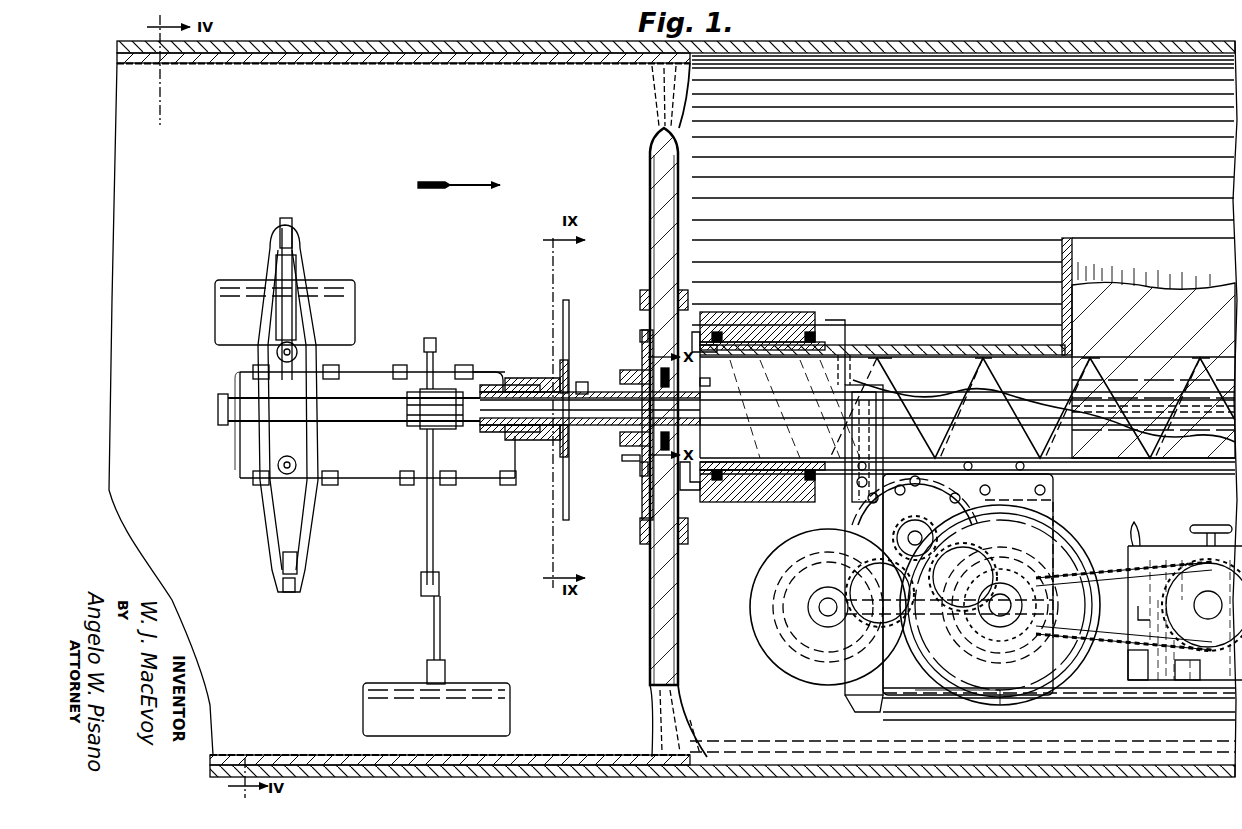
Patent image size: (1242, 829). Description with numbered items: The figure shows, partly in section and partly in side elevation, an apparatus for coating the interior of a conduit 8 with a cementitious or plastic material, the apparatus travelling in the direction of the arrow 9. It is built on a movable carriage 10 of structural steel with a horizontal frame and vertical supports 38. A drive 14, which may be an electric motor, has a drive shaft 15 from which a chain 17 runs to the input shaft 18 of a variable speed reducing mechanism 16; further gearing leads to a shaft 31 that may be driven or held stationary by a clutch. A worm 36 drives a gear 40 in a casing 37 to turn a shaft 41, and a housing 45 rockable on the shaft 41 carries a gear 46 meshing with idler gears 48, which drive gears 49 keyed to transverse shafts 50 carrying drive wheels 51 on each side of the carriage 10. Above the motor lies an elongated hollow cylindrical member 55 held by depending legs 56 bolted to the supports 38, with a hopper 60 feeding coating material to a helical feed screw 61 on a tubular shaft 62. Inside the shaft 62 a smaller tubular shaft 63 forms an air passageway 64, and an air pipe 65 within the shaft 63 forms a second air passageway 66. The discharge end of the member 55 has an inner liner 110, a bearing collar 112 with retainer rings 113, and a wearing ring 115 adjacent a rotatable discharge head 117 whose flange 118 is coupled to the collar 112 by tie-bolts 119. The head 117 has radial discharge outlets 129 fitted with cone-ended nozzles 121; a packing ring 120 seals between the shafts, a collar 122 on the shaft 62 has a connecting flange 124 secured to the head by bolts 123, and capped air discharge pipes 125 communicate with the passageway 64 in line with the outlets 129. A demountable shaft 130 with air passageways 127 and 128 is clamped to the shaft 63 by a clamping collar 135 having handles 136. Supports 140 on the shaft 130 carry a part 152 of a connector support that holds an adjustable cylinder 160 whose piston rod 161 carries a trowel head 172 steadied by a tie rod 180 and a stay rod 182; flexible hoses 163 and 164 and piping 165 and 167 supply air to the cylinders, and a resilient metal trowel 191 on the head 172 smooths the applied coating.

The conduit 8 is at (507, 53).
The arrow 9 is at (460, 183).
The carriage 10 is at (845, 703).
The drive 14 is at (1078, 552).
The drive shaft 15 is at (1020, 575).
The variable speed reducing mechanism 16 is at (1158, 546).
The chain 17 is at (1134, 522).
The input shaft 18 is at (1220, 575).
The shaft 31 is at (1150, 614).
The worm 36 is at (848, 620).
The casing 37 is at (1010, 492).
The supports 38 is at (875, 385).
The gear 40 is at (1040, 500).
The shaft 41 is at (928, 525).
The housing 45 is at (840, 518).
The gear 46 is at (885, 560).
The idler gears 48 is at (840, 548).
The gears 49 is at (792, 586).
The transverse shafts 50 is at (810, 610).
The drive wheel 51 is at (775, 657).
The hollow cylindrical member 55 is at (925, 340).
The depending legs 56 is at (845, 352).
The hopper 60 is at (1145, 242).
The feed screw 61 is at (975, 355).
The tubular rotatable shaft 62 is at (1020, 372).
The tubular shaft 63 is at (745, 409).
The air passageway 64 is at (760, 312).
The air pipe 65 is at (640, 468).
The air passageway 66 is at (590, 382).
The inner liner 110 is at (845, 320).
The collar 112 is at (760, 502).
The retainer rings 113 is at (735, 342).
The wearing ring 115 is at (722, 334).
The discharge head 117 is at (650, 500).
The flange 118 is at (692, 490).
The tie-bolts 119 is at (700, 332).
The packing ring 120 is at (625, 446).
The nozzle 121 is at (680, 180).
The collar 122 is at (620, 378).
The bolts 123 is at (640, 336).
The connecting flange 124 is at (640, 480).
The air discharge pipes 125 is at (669, 378).
The air passageway 127 is at (525, 385).
The air passageway 128 is at (500, 432).
The discharge outlets 129 is at (640, 296).
The shaft 130 is at (218, 404).
The clamping collar 135 is at (578, 356).
The handles 136 is at (560, 326).
The supports 140 is at (400, 430).
The part 152 is at (240, 372).
The cylinder 160 is at (297, 352).
The piston rod 161 is at (440, 608).
The flexible hose 163 is at (421, 580).
The flexible hose 164 is at (437, 350).
The piping 165 is at (410, 372).
The piping 167 is at (372, 480).
The trowel head 172 is at (445, 672).
The tie rod 180 is at (297, 562).
The stay rod 182 is at (283, 588).
The trowel 191 is at (215, 310).